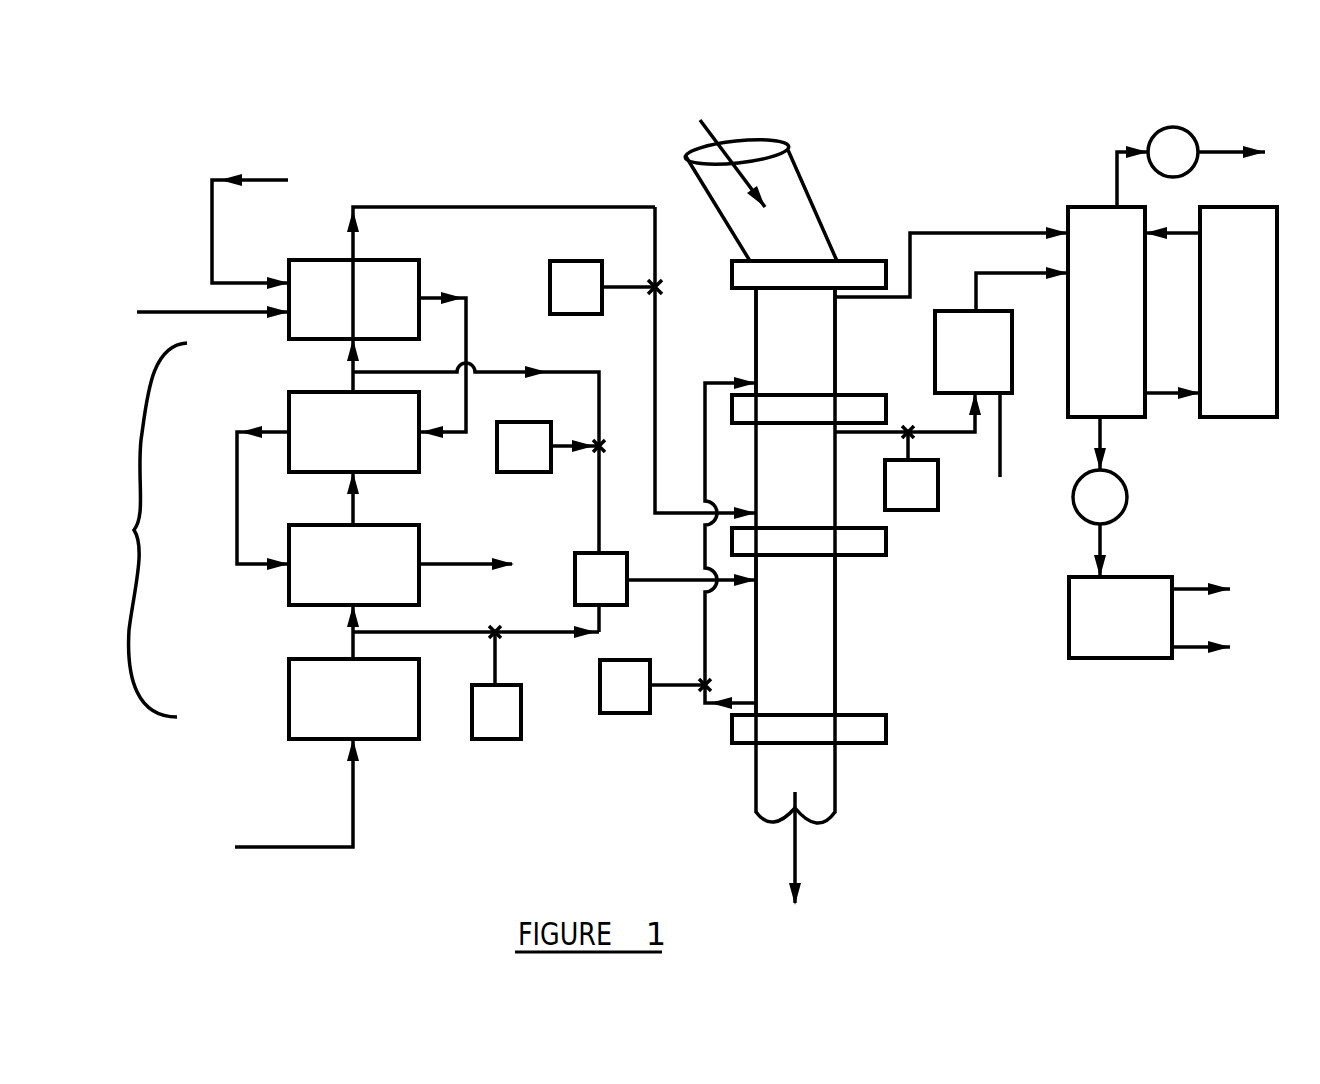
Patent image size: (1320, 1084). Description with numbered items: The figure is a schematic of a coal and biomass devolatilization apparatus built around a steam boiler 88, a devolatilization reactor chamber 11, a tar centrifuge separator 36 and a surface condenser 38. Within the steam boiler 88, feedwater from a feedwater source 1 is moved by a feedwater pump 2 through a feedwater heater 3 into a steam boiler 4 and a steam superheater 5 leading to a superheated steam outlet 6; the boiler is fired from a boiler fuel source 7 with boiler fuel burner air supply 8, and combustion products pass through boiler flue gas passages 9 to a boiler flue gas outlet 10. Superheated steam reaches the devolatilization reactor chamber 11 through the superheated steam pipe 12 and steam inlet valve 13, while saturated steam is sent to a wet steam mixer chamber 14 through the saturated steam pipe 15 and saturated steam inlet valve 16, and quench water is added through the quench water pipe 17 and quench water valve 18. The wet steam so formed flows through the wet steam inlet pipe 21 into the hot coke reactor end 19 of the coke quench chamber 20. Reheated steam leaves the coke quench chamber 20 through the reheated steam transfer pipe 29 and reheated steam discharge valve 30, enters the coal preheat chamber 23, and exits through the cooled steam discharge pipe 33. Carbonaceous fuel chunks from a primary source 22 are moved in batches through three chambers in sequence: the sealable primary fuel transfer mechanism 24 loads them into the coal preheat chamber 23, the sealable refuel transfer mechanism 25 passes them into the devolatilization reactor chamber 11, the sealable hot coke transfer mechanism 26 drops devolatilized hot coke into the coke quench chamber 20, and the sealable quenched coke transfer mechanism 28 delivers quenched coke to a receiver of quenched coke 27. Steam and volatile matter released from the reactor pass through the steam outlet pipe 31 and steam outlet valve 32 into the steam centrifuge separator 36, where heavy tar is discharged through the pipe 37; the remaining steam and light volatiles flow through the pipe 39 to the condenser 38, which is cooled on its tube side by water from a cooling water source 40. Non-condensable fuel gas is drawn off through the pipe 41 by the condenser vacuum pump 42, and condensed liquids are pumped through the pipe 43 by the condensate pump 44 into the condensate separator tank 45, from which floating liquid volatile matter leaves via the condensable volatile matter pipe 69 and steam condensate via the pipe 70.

The feedwater source 1 is at (300, 843).
The feedwater pump 2 is at (308, 687).
The feedwater heater 3 is at (313, 582).
The steam boiler 4 is at (307, 452).
The steam superheater 5 is at (315, 315).
The superheated steam outlet 6 is at (390, 203).
The boiler fuel source 7 is at (272, 172).
The boiler fuel burner air supply 8 is at (204, 310).
The boiler flue gas passages 9 is at (468, 313).
The boiler flue gas outlet 10 is at (467, 562).
The devolatilization reactor chamber 11 is at (813, 467).
The superheated steam pipe 12 is at (658, 345).
The steam inlet valve 13 is at (570, 272).
The wet steam mixer chamber 14 is at (588, 580).
The saturated steam pipe 15 is at (563, 368).
The saturated steam inlet valve 16 is at (513, 458).
The quench water pipe 17 is at (455, 636).
The quench water valve 18 is at (515, 735).
The hot coke reactor end 19 is at (800, 600).
The coke quench chamber 20 is at (800, 663).
The wet steam inlet pipe 21 is at (675, 582).
The primary source of carbonaceous fuel chunks 22 is at (760, 185).
The coal preheat chamber 23 is at (790, 360).
The sealable primary fuel transfer mechanism 24 is at (795, 275).
The sealable refuel transfer mechanism 25 is at (798, 408).
The sealable hot coke transfer mechanism 26 is at (810, 540).
The receiver of quenched coke 27 is at (790, 807).
The sealable quenched coke transfer mechanism 28 is at (837, 727).
The reheated steam transfer pipe 29 is at (717, 705).
The reheated steam discharge valve 30 is at (627, 702).
The steam outlet pipe 31 is at (948, 434).
The steam outlet valve 32 is at (908, 490).
The cooled steam discharge pipe 33 is at (937, 230).
The steam centrifuge separator 36 is at (947, 322).
The tar discharge pipe 37 is at (1002, 427).
The steam condenser separator 38 is at (1080, 220).
The transfer pipe 39 is at (1000, 270).
The cooling water source 40 is at (1243, 398).
The fuel gas pipe 41 is at (1118, 175).
The condenser vacuum pump 42 is at (1193, 143).
The condensate pipe 43 is at (1107, 432).
The condensate pump 44 is at (1115, 492).
The condensate separator tank 45 is at (1135, 593).
The condensable volatile matter pipe 69 is at (1202, 597).
The steam condensate pipe 70 is at (1190, 650).
The steam boiler 88 is at (142, 530).